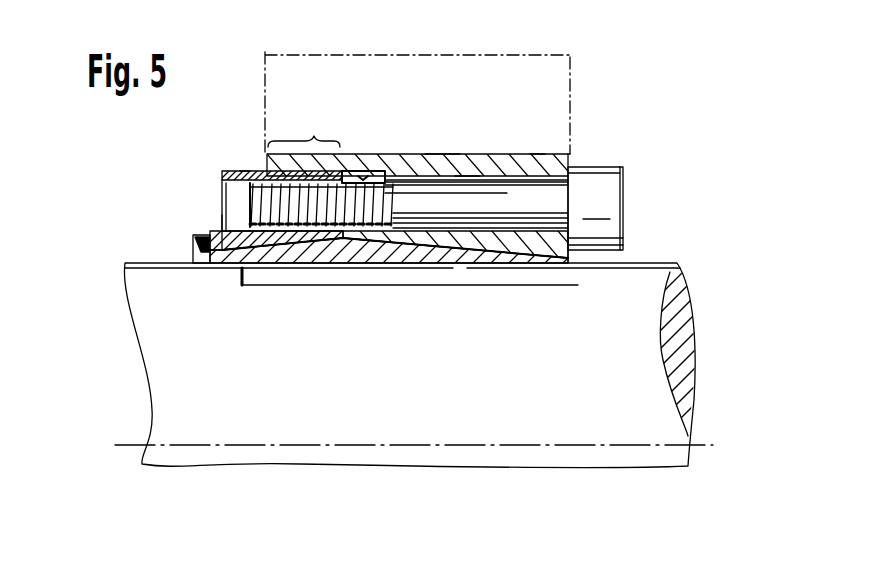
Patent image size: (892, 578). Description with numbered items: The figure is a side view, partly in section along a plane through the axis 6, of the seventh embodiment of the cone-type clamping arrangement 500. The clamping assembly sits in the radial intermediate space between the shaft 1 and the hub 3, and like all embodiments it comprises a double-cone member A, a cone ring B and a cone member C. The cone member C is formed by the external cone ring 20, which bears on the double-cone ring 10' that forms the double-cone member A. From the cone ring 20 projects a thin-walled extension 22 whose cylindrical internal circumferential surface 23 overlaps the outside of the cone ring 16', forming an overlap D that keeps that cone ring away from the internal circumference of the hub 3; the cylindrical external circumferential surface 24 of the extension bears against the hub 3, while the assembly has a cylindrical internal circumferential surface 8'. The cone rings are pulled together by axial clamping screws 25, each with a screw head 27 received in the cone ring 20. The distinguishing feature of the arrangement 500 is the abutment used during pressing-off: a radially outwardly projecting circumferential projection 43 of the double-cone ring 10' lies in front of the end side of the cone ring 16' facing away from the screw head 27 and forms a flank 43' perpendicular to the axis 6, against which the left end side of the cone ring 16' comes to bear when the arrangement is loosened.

The shaft 1 is at (643, 327).
The hub 3 is at (556, 72).
The axis 6 is at (700, 446).
The cylindrical internal circumferential surface 8' is at (395, 277).
The double-cone ring 10' is at (395, 285).
The cone ring 16' is at (277, 204).
The external cone ring 20 is at (504, 165).
The thin-walled extension 22 is at (343, 161).
The cylindrical internal circumferential surface 23 is at (365, 177).
The cylindrical external circumferential surface 24 is at (438, 153).
The axial clamping screw 25 is at (463, 168).
The screw head 27 is at (599, 191).
The circumferential projection 43 is at (176, 242).
The flank 43' is at (182, 208).
The cone-type clamping arrangement 500 is at (633, 143).
The double-cone member A is at (241, 284).
The cone ring B is at (243, 168).
The cone member C is at (540, 152).
The overlap D is at (313, 136).